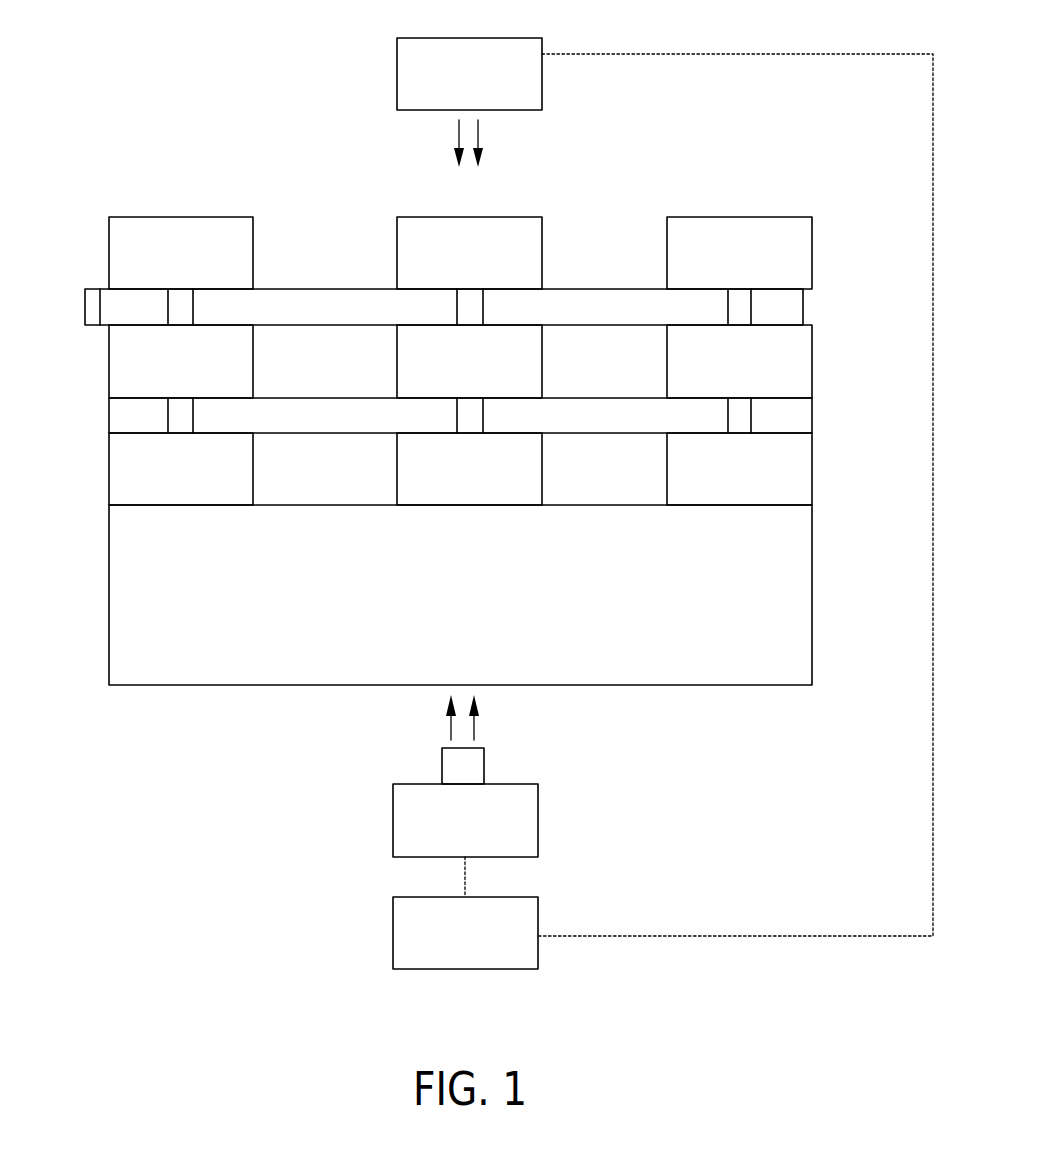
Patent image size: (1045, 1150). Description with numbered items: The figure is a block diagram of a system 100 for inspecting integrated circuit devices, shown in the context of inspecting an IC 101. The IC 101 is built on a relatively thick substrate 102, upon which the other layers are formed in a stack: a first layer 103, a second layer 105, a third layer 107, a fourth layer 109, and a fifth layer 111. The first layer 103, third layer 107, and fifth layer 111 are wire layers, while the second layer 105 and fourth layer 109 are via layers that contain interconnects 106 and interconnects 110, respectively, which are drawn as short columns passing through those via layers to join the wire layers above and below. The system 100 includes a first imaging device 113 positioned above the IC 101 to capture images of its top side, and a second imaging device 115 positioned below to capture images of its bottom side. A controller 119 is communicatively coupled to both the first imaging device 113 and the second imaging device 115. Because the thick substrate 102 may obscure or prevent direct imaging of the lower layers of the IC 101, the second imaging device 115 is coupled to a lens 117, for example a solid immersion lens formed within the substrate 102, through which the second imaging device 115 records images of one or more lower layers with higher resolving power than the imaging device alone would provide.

The system 100 is at (144, 39).
The IC 101 is at (817, 217).
The substrate 102 is at (109, 507).
The first layer 103 is at (109, 433).
The second layer 105 is at (109, 398).
The interconnects 106 is at (738, 415).
The third layer 107 is at (109, 325).
The fourth layer 109 is at (85, 289).
The interconnects 110 is at (181, 306).
The fifth layer 111 is at (109, 217).
The first imaging device 113 is at (469, 102).
The second imaging device 115 is at (465, 776).
The lens 117 is at (463, 767).
The controller 119 is at (465, 933).